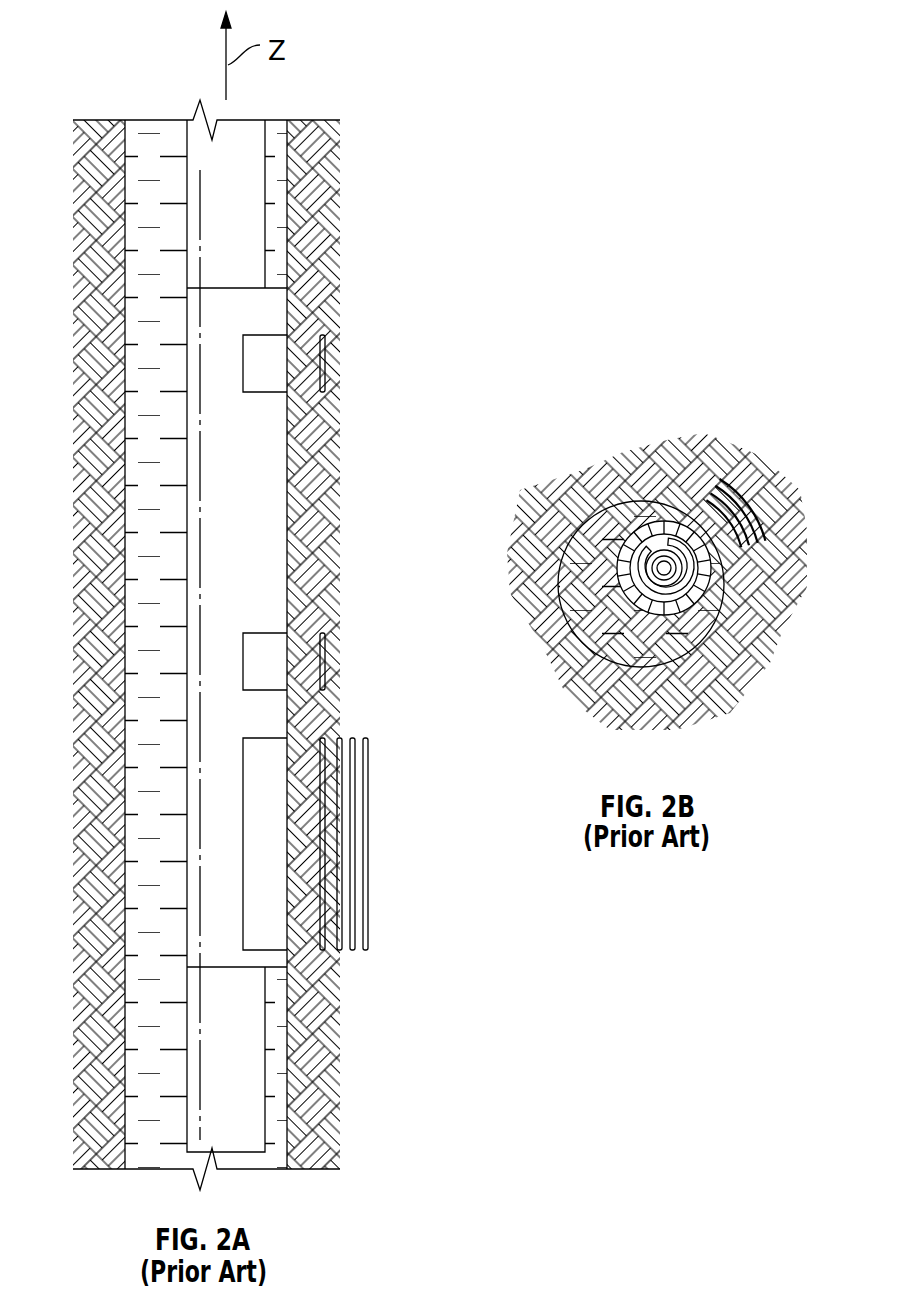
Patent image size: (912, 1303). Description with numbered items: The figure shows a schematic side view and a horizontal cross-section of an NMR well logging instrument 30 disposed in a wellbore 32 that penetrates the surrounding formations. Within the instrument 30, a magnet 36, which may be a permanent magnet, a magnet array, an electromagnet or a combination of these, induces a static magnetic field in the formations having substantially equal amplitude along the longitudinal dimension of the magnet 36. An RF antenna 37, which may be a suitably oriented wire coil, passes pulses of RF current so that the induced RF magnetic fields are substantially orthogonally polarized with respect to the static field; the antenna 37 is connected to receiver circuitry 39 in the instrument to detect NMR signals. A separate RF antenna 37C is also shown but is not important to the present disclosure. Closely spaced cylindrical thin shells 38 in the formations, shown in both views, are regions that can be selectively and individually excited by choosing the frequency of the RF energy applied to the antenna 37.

In FIG. 2A, the NMR well logging instrument 30 is at (232, 157).
In FIG. 2B, the NMR well logging instrument 30 is at (660, 607).
In FIG. 2A, the wellbore 32 is at (148, 360).
In FIG. 2B, the wellbore 32 is at (620, 640).
In FIG. 2B, the magnet 36 is at (655, 548).
In FIG. 2A, the RF antenna 37 is at (265, 753).
In FIG. 2B, the RF antenna 37 is at (680, 512).
In FIG. 2A, the separate RF antenna 37C is at (265, 357).
In FIG. 2A, the closely spaced cylindrical thin shells 38 is at (360, 955).
In FIG. 2B, the closely spaced cylindrical thin shells 38 is at (793, 640).
In FIG. 2A, the receiver circuitry 39 is at (237, 483).